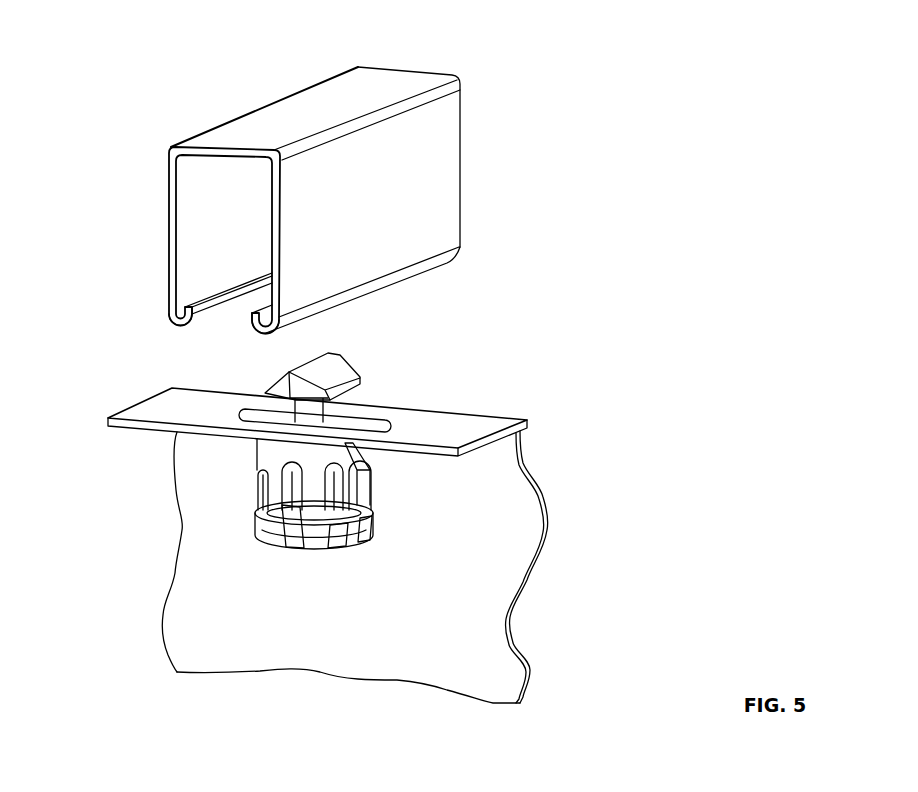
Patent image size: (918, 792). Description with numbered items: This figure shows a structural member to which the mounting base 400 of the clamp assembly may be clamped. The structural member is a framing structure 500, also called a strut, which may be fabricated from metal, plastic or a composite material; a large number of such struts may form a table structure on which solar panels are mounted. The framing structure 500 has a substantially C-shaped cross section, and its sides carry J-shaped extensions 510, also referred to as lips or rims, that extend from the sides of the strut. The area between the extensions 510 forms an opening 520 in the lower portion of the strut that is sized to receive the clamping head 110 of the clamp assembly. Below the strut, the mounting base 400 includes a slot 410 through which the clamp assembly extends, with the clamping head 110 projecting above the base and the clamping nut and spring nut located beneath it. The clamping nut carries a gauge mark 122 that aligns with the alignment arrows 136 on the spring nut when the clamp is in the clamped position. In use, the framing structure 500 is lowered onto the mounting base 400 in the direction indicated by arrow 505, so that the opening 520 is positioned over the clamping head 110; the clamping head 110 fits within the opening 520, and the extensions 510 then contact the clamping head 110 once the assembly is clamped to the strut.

The framing structure 500 is at (233, 120).
The arrow 505 is at (500, 217).
The J-shaped extensions 510 is at (170, 323).
The opening 520 is at (208, 338).
The mounting base 400 is at (143, 435).
The slot 410 is at (382, 422).
The clamping head 110 is at (343, 368).
The gauge mark 122 is at (352, 452).
The alignment arrows 136 is at (270, 537).